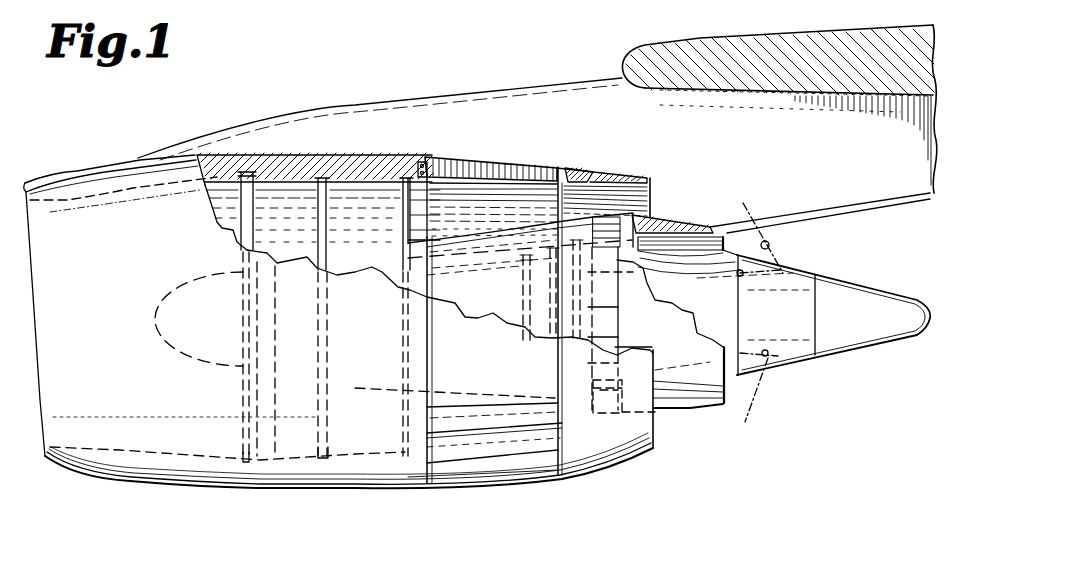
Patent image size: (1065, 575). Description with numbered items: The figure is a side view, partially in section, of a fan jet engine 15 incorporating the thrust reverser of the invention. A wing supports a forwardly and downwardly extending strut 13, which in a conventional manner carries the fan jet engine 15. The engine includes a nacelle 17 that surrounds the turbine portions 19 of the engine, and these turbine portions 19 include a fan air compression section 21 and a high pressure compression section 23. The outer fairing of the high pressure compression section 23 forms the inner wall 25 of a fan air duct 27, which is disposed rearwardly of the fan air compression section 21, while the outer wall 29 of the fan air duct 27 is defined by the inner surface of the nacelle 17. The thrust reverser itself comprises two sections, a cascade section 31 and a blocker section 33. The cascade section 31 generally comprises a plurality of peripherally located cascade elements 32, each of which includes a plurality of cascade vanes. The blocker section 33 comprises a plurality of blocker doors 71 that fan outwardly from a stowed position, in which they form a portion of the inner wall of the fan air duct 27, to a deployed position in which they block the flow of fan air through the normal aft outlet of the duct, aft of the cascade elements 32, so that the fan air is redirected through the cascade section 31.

The strut 13 is at (445, 103).
The fan jet engine 15 is at (270, 148).
The nacelle 17 is at (346, 175).
The turbine portions 19 is at (369, 192).
The fan air compression section 21 is at (292, 195).
The high pressure compression section 23 is at (600, 428).
The inner wall 25 is at (590, 184).
The fan air duct 27 is at (573, 220).
The outer wall 29 is at (586, 180).
The cascade section 31 is at (505, 153).
The cascade elements 32 is at (528, 160).
The blocker section 33 is at (608, 222).
The blocker doors 71 is at (615, 297).